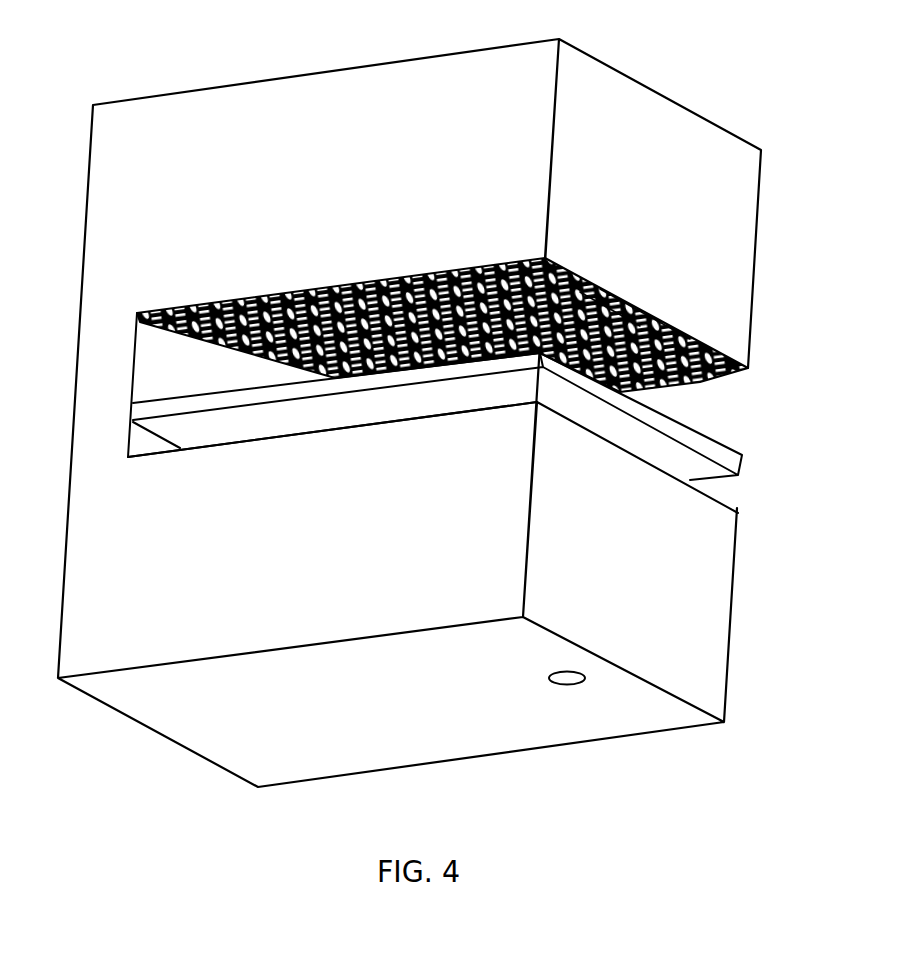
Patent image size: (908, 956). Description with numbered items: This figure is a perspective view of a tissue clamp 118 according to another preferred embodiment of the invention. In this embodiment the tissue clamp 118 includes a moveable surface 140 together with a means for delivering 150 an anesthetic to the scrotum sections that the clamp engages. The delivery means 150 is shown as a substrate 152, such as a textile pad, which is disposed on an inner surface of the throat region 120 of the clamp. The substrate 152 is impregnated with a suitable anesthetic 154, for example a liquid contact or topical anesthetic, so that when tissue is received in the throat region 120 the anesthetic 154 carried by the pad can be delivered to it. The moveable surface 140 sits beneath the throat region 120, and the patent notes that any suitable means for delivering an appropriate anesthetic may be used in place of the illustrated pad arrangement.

The tissue clamp 118 is at (735, 212).
The throat region 120 is at (740, 424).
The moveable surface 140 is at (742, 463).
The means for delivering an anesthetic 150 is at (754, 381).
The substrate 152 is at (621, 295).
The anesthetic 154 is at (687, 331).